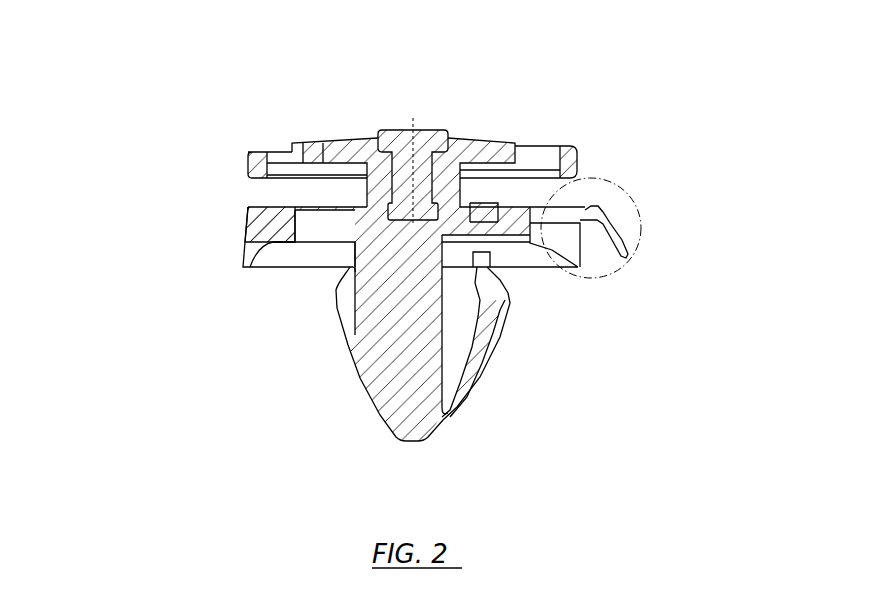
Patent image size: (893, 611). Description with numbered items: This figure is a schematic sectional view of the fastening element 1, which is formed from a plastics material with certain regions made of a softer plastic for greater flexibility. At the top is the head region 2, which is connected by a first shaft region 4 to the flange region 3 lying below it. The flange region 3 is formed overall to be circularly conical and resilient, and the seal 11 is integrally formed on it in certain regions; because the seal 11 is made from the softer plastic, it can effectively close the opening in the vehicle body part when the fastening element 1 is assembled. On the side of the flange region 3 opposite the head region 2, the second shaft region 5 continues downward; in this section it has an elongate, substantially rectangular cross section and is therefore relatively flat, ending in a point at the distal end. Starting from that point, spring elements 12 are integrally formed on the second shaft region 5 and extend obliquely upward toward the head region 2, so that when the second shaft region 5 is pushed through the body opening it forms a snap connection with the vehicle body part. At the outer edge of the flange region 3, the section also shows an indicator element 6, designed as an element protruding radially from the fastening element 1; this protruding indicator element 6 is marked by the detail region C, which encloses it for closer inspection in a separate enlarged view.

The fastening element 1 is at (314, 78).
The head region 2 is at (473, 147).
The flange region 3 is at (332, 218).
The first shaft region 4 is at (377, 192).
The second shaft region 5 is at (385, 358).
The indicator element 6 is at (618, 240).
The seal 11 is at (262, 243).
The spring element 12 is at (485, 307).
The detail region C is at (629, 197).